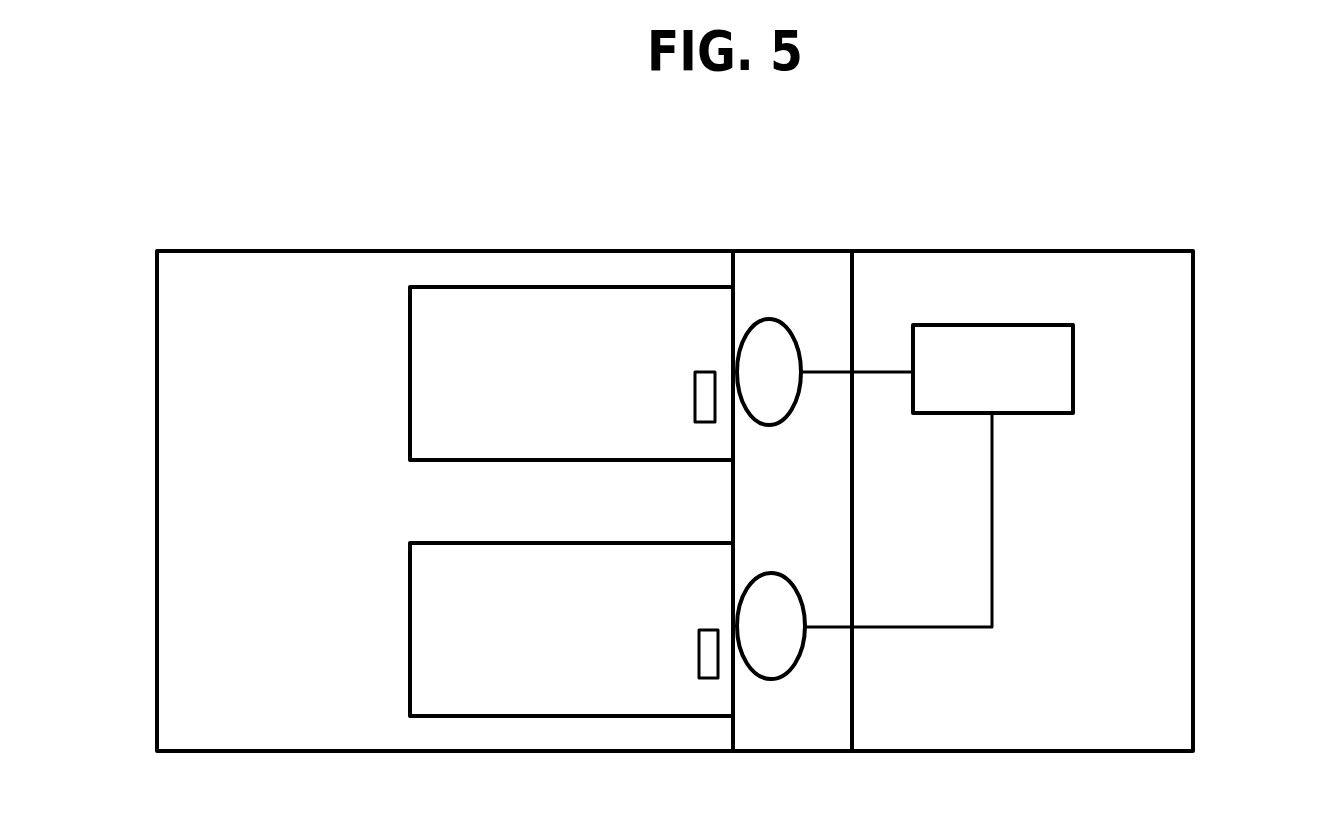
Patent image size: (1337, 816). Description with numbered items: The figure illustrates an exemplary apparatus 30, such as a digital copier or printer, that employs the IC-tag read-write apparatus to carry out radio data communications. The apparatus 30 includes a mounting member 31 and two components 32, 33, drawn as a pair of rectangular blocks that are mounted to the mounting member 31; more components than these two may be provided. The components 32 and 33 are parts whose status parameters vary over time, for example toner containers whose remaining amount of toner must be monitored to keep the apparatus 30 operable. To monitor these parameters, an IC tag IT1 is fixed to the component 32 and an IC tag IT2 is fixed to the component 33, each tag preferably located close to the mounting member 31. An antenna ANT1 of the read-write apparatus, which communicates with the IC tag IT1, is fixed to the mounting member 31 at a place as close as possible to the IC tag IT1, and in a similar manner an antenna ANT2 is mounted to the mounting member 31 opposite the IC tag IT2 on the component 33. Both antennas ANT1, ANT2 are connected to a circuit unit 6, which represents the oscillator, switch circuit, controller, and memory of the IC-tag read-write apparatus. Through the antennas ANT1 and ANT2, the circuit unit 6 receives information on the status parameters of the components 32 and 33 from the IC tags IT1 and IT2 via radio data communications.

The apparatus 30 is at (1170, 300).
The mounting member 31 is at (854, 680).
The component 32 is at (410, 379).
The component 33 is at (410, 634).
The circuit unit 6 is at (1075, 367).
The antenna ANT1 is at (781, 319).
The antenna ANT2 is at (757, 679).
The IC tag IT1 is at (703, 371).
The IC tag IT2 is at (706, 629).